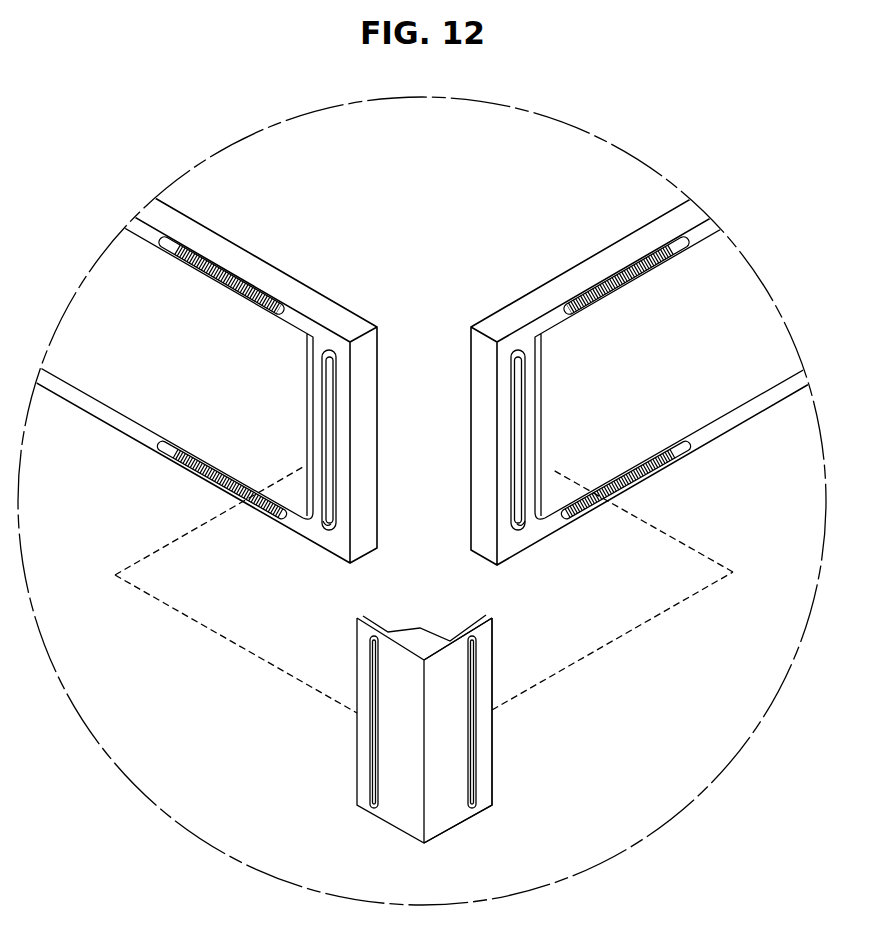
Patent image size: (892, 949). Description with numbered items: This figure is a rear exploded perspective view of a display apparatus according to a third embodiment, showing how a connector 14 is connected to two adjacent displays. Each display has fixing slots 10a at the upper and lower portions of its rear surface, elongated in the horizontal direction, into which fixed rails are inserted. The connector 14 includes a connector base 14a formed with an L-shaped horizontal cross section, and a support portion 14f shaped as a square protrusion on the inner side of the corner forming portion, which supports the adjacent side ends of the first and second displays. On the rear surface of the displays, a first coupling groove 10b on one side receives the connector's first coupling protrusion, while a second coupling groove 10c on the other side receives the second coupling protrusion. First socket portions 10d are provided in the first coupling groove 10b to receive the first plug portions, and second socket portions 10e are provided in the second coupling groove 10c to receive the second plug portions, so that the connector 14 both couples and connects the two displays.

The fixing slot 10a is at (190, 272).
The first coupling groove 10b is at (523, 523).
The second coupling groove 10c is at (325, 518).
The first socket portions 10d is at (527, 470).
The second socket portions 10e is at (327, 473).
The connector 14 is at (462, 709).
The connector base 14a is at (485, 650).
The support portion 14f is at (418, 628).